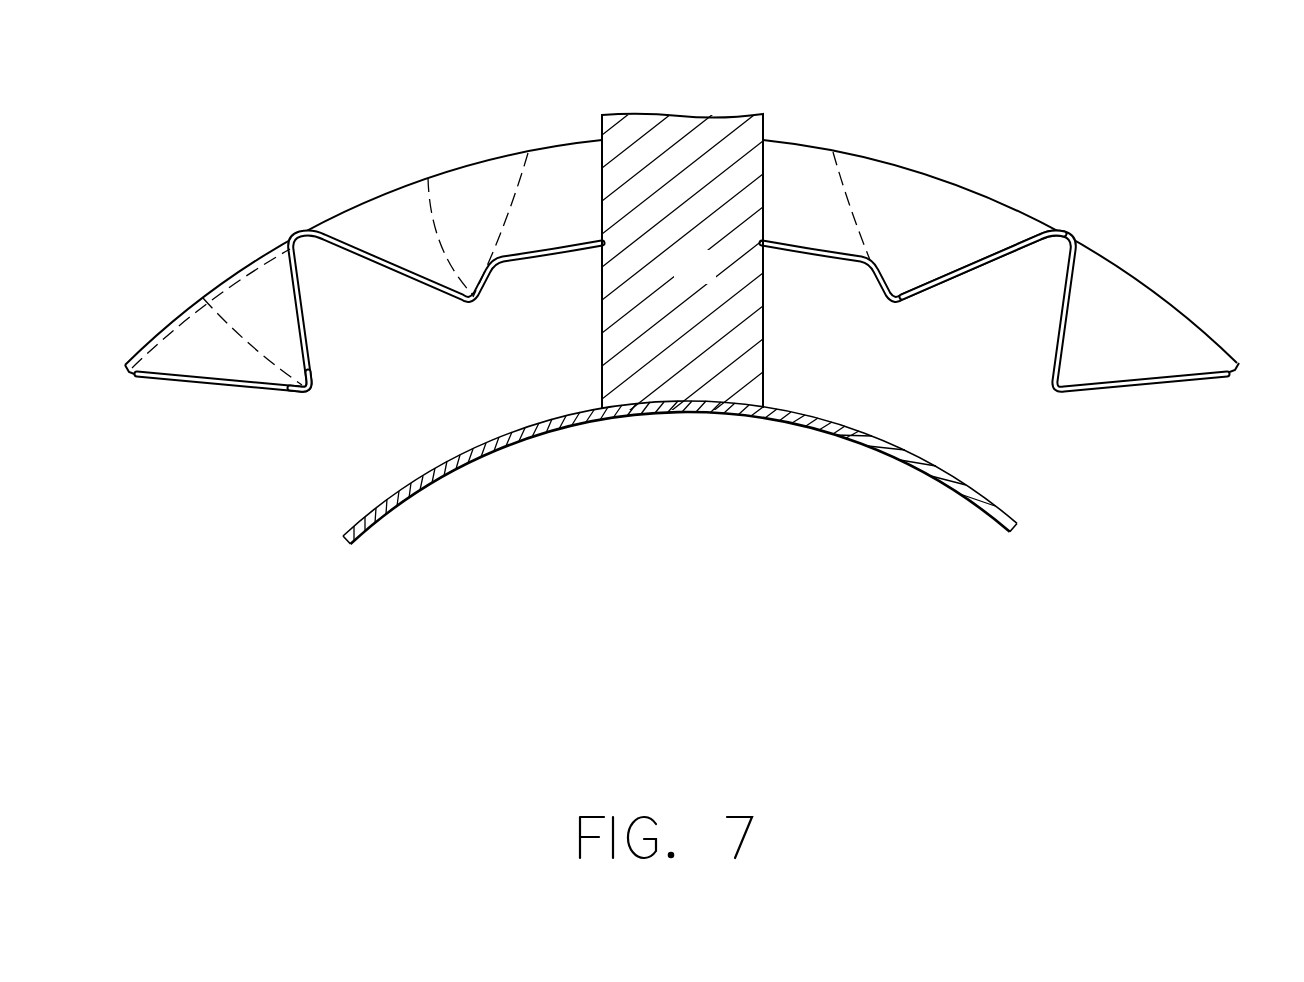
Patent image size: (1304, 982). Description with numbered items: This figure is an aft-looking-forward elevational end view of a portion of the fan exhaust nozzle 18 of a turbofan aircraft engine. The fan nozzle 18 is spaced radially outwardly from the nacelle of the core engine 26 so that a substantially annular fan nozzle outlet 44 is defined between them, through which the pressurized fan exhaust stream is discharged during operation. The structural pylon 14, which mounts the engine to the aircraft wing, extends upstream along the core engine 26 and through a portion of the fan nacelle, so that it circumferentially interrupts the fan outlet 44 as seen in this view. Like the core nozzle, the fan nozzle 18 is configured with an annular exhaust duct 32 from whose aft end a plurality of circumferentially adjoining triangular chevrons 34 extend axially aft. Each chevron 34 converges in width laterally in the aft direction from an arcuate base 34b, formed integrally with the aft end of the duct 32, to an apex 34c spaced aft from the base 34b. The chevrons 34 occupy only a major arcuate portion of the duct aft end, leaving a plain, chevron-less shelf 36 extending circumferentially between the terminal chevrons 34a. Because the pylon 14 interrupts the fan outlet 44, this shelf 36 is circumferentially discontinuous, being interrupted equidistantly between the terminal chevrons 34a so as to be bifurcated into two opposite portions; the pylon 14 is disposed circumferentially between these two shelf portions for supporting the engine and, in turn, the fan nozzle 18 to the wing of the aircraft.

The structural pylon 14 is at (714, 281).
The fan exhaust nozzle 18 is at (1176, 284).
The core engine 26 is at (897, 449).
The annular exhaust duct 32 is at (947, 177).
The chevrons 34 is at (1150, 362).
The terminal chevrons 34a is at (922, 262).
The chevron base 34b is at (245, 263).
The apex 34c is at (307, 397).
The shelf 36 is at (555, 165).
The fan nozzle outlet 44 is at (440, 410).